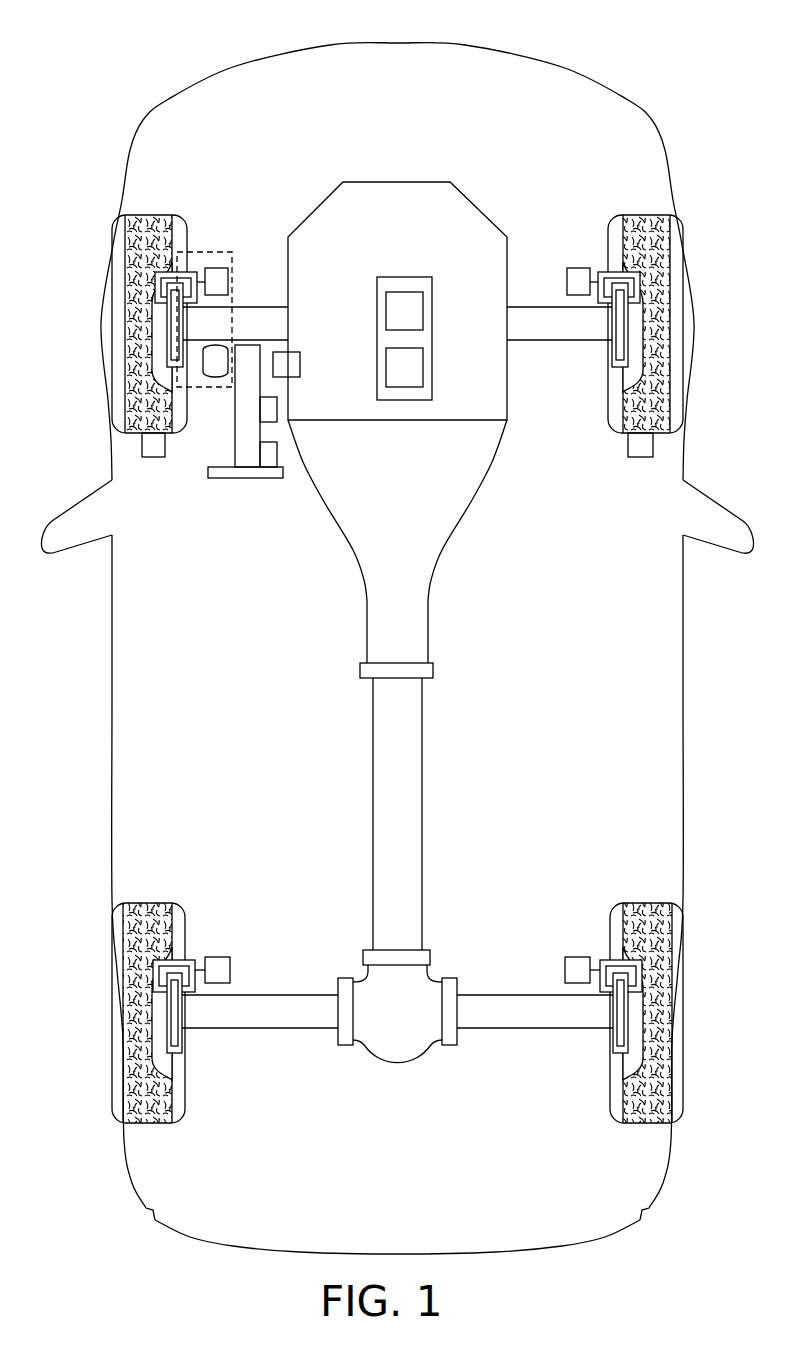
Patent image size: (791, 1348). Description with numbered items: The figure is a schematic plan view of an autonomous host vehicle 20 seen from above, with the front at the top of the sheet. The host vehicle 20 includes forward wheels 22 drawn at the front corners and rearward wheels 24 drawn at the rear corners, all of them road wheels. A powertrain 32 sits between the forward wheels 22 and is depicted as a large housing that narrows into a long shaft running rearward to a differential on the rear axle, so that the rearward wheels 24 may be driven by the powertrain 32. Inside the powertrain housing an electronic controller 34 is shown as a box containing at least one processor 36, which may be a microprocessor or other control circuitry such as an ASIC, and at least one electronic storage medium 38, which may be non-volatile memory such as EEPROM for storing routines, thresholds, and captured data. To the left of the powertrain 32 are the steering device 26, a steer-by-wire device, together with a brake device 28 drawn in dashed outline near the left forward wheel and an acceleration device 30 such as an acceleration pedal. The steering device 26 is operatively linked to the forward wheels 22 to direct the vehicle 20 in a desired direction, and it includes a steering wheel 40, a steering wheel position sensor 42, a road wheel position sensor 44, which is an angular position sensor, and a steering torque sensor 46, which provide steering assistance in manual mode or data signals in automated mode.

The host vehicle 20 is at (627, 74).
The forward wheels 22 is at (684, 292).
The rearward wheels 24 is at (684, 1060).
The steering device 26 is at (218, 432).
The brake device 28 is at (210, 246).
The acceleration device 30 is at (299, 344).
The powertrain 32 is at (468, 185).
The electronic controller 34 is at (404, 273).
The processor 36 is at (424, 306).
The electronic storage medium 38 is at (424, 370).
The steering wheel 40 is at (246, 470).
The steering wheel position sensor 42 is at (277, 457).
The road wheel position sensor 44 is at (143, 450).
The steering torque sensor 46 is at (278, 410).